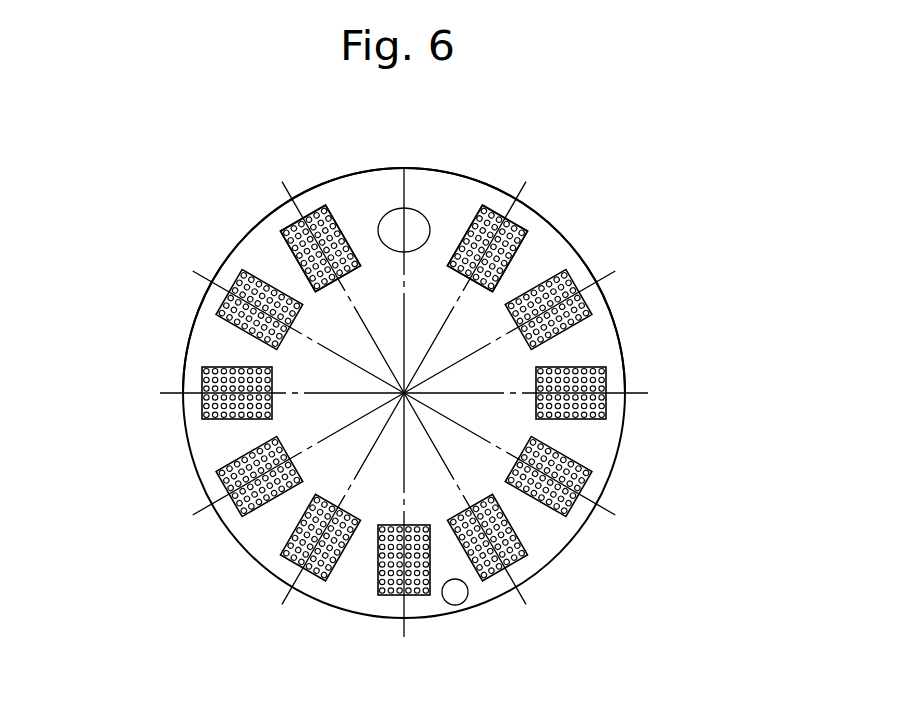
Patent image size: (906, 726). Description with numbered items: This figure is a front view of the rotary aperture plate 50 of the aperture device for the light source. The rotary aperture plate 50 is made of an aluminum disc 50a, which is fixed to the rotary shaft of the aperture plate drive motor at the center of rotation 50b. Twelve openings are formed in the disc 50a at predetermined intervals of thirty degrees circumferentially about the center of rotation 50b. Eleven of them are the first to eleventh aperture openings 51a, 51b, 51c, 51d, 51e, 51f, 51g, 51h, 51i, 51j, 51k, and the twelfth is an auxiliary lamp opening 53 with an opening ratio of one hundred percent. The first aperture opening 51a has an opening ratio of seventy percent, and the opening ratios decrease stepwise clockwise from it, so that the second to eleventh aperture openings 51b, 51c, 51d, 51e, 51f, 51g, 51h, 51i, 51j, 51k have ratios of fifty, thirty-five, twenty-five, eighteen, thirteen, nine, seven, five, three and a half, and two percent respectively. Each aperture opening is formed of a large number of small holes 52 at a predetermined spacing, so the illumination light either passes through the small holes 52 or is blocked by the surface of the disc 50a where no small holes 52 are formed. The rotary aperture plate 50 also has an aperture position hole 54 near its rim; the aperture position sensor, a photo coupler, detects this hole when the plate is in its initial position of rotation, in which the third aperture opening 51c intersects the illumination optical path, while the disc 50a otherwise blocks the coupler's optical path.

The rotary aperture plate 50 is at (636, 189).
The disc 50a is at (366, 172).
The center of rotation 50b is at (405, 392).
The first aperture opening 51a is at (484, 208).
The second aperture opening 51b is at (580, 291).
The third aperture opening 51c is at (607, 390).
The fourth aperture opening 51d is at (586, 497).
The fifth aperture opening 51e is at (506, 569).
The sixth aperture opening 51f is at (406, 598).
The seventh aperture opening 51g is at (294, 572).
The eighth aperture opening 51h is at (228, 487).
The ninth aperture opening 51i is at (201, 380).
The tenth aperture opening 51j is at (237, 285).
The eleventh aperture opening 51k is at (318, 208).
The small holes 52 is at (280, 236).
The auxiliary lamp opening 53 is at (404, 208).
The aperture position hole 54 is at (455, 593).